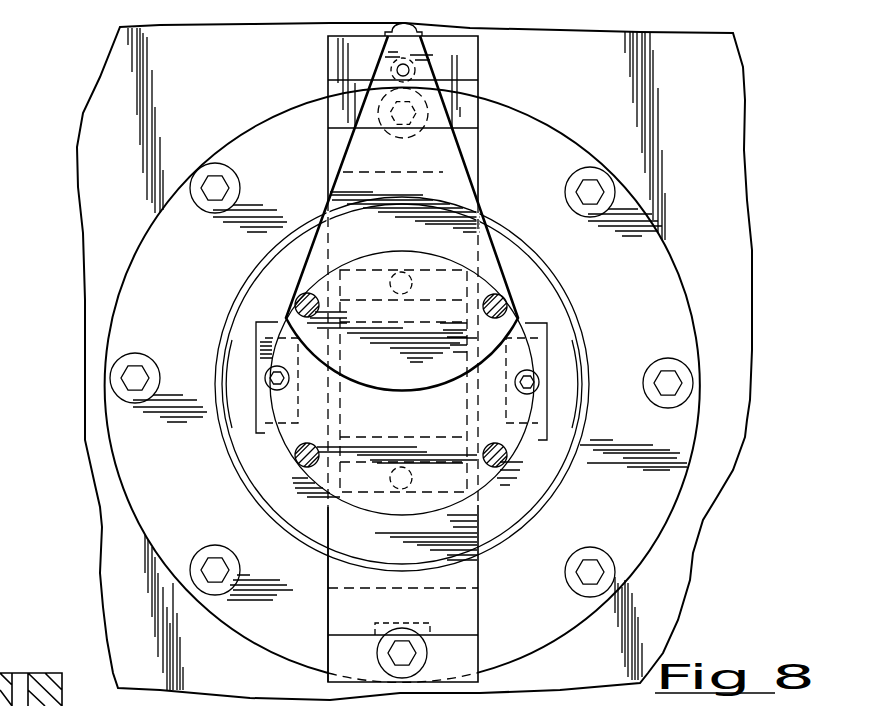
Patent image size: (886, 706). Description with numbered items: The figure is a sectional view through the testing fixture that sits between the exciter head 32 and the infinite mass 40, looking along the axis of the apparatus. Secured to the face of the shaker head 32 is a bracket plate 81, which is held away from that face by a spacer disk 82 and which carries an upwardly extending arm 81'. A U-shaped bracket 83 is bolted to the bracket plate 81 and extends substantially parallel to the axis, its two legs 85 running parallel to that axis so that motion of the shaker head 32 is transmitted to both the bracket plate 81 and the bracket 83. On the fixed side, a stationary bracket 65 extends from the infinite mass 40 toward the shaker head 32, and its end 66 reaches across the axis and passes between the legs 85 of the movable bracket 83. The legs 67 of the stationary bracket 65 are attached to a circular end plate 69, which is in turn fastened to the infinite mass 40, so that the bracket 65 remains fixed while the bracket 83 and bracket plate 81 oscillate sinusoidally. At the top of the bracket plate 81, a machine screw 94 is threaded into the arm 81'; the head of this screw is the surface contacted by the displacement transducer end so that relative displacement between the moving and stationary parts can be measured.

The infinite mass 40 is at (97, 75).
The circular end plate 69 is at (562, 622).
The upwardly extending arm 81' is at (402, 366).
The end of stationary bracket 66 is at (467, 577).
The stationary bracket 65 is at (325, 580).
The legs of stationary bracket 67 is at (443, 172).
The spacer disk 82 is at (483, 285).
The bracket plate 81 is at (357, 383).
The U-shaped bracket 83 is at (256, 332).
The legs of U-shaped bracket 85 is at (262, 460).
The machine screw 94 is at (390, 68).
The exciter head 32 is at (22, 672).